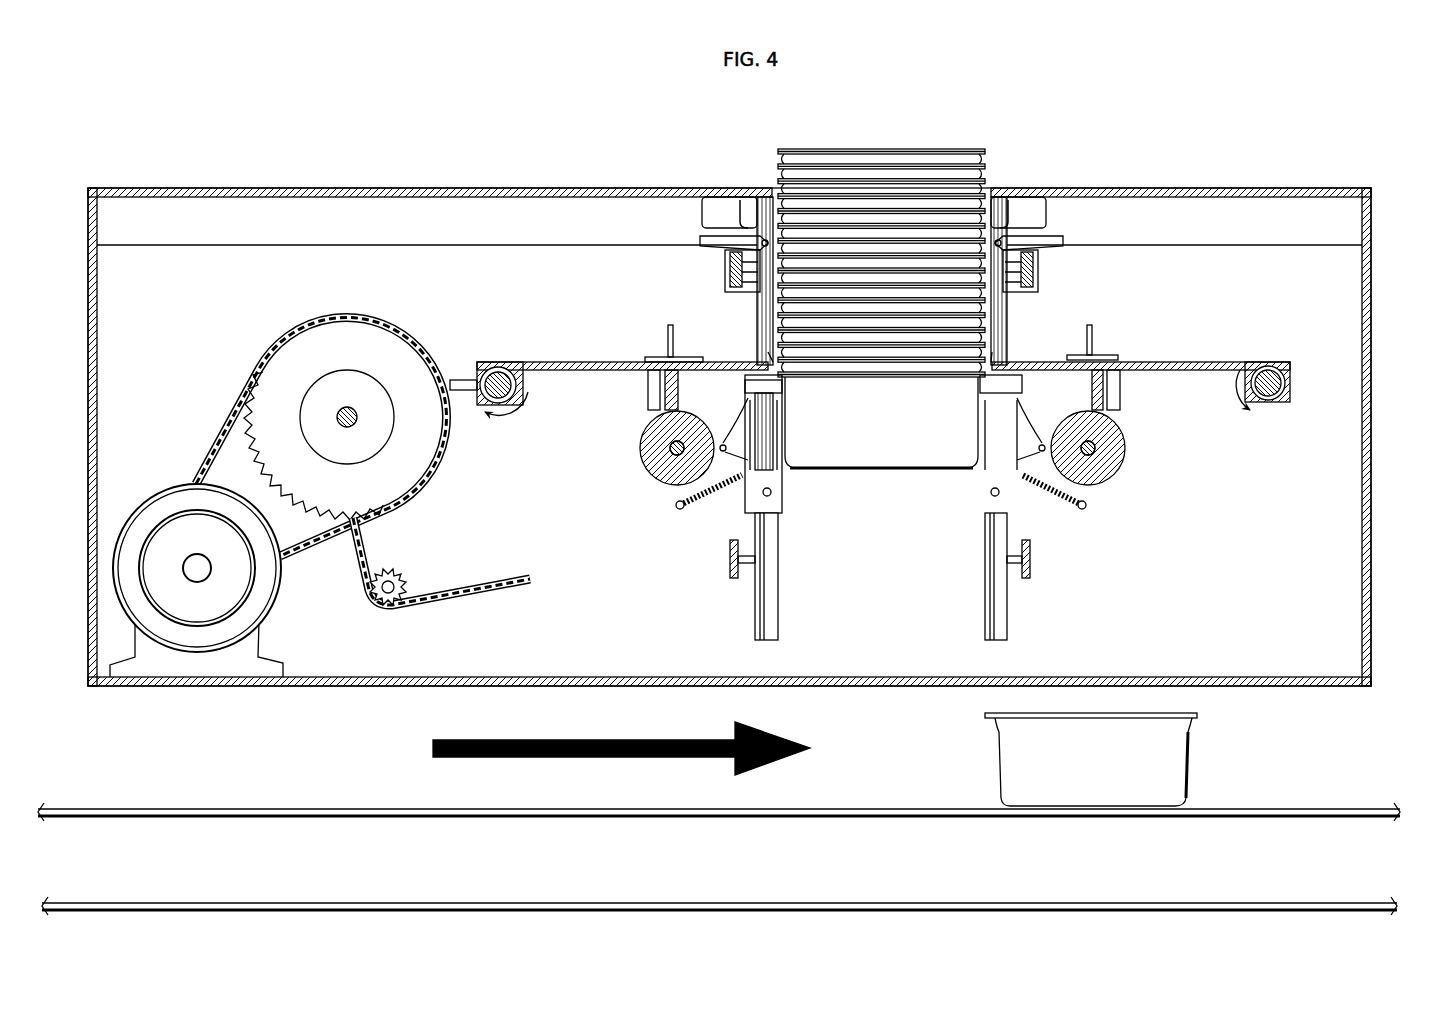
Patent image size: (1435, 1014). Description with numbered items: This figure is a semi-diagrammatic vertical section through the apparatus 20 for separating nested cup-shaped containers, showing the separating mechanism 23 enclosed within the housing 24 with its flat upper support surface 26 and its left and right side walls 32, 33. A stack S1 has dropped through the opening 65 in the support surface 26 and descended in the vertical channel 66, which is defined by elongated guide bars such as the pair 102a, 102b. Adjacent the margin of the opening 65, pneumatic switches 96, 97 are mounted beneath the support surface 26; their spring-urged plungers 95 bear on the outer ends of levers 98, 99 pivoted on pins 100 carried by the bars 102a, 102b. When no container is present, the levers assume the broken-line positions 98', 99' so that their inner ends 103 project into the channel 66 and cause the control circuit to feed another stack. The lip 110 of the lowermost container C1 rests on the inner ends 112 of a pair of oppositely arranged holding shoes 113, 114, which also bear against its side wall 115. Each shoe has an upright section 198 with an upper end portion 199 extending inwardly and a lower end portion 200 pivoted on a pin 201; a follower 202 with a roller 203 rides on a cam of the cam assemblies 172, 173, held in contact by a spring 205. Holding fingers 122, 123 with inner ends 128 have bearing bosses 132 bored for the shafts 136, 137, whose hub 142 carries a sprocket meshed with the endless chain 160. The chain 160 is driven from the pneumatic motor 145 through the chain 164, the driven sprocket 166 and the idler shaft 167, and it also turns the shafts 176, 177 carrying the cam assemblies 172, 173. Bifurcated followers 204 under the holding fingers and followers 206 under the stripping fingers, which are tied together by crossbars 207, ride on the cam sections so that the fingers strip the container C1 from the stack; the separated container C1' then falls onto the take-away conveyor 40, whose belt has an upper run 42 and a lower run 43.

The apparatus 20 is at (1190, 126).
The separating mechanism 23 is at (1122, 510).
The housing 24 is at (1290, 186).
The upper support surface 26 is at (460, 187).
The left side wall 32 is at (88, 420).
The right side wall 33 is at (1372, 390).
The take-away conveyor 40 is at (245, 806).
The upper run 42 is at (138, 808).
The lower run 43 is at (272, 902).
The opening 65 is at (1003, 186).
The channel 66 is at (763, 150).
The plunger 95 is at (733, 215).
The pneumatic switch 96 is at (715, 195).
The pneumatic switch 97 is at (1040, 195).
The lever 98 is at (679, 228).
The broken line position of lever 98' is at (665, 257).
The lever 99 is at (1069, 228).
The broken line position of lever 99' is at (1096, 257).
The pin 100 is at (748, 262).
The guide bar 102a is at (760, 305).
The guide bar 102b is at (1004, 308).
The inner end of lever 103 is at (752, 274).
The lip 110 is at (883, 352).
The inner end of holding shoe 112 is at (783, 382).
The holding shoe 113 is at (781, 474).
The holding shoe 114 is at (973, 478).
The side wall 115 is at (892, 454).
The holding finger 122 is at (583, 361).
The holding finger 123 is at (1205, 360).
The inner end of holding finger 128 is at (770, 352).
The bearing boss 132 is at (478, 362).
The shaft 136 is at (490, 412).
The shaft 137 is at (1275, 405).
The hub 142 is at (867, 406).
The pneumatic motor 145 is at (152, 488).
The endless chain 160 is at (470, 578).
The chain 164 is at (213, 440).
The driven sprocket 166 is at (335, 345).
The idler shaft 167 is at (346, 428).
The cam assembly 172 is at (685, 495).
The cam assembly 173 is at (1080, 495).
The shaft 176 is at (658, 433).
The shaft 177 is at (1105, 432).
The upright section 198 is at (752, 445).
The upper end portion 199 is at (773, 392).
The lower end portion 200 is at (752, 500).
The pin 201 is at (772, 497).
The follower 202 is at (748, 400).
The roller 203 is at (721, 443).
The follower 204 is at (665, 357).
The spring 205 is at (678, 512).
The follower 206 is at (655, 390).
The crossbar 207 is at (667, 335).
The stack of containers S1 is at (939, 150).
The lowermost container C1 is at (881, 440).
The separated container C1' is at (1121, 759).